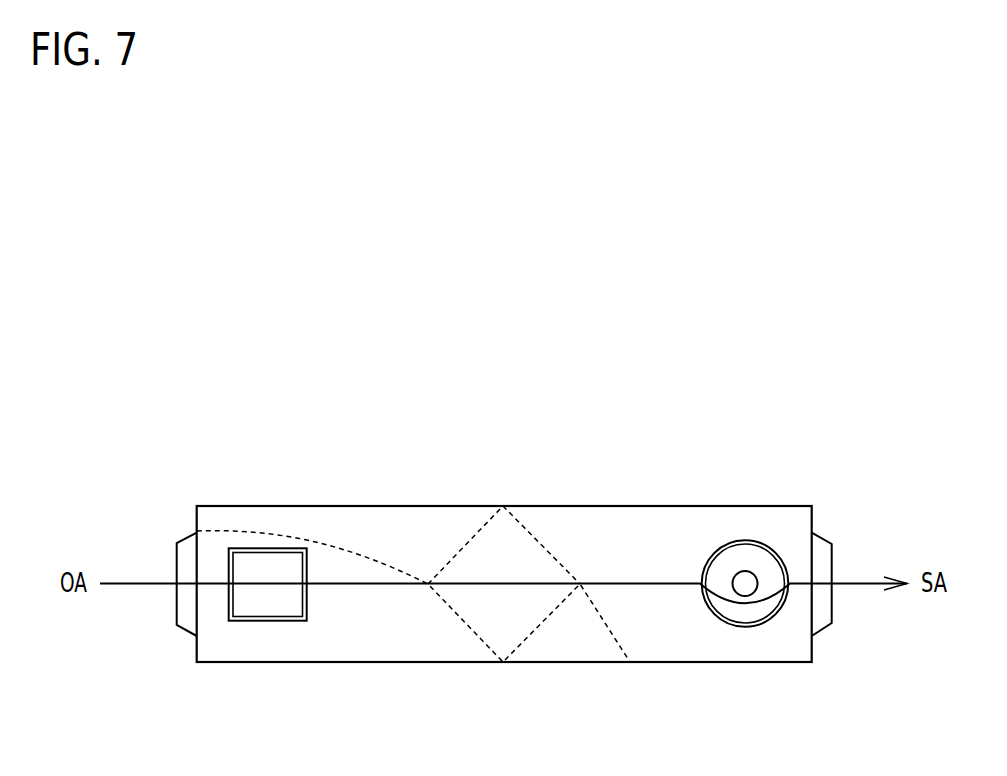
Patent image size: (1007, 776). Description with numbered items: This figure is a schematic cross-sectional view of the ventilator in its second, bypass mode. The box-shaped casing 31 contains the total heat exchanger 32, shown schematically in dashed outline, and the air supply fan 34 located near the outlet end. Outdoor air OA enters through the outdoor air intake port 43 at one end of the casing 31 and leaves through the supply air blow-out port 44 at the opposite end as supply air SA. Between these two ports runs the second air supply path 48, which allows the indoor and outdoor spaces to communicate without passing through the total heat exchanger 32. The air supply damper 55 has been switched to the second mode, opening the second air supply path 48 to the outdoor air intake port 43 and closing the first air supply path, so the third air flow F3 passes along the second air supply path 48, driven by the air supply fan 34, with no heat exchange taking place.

The casing 31 is at (650, 506).
The total heat exchanger 32 is at (477, 533).
The air supply fan 34 is at (742, 540).
The outdoor air intake port 43 is at (176, 599).
The supply air blow-out port 44 is at (832, 600).
The second air supply path 48 is at (402, 629).
The air supply damper 55 is at (263, 593).
The third air flow F3 is at (603, 584).